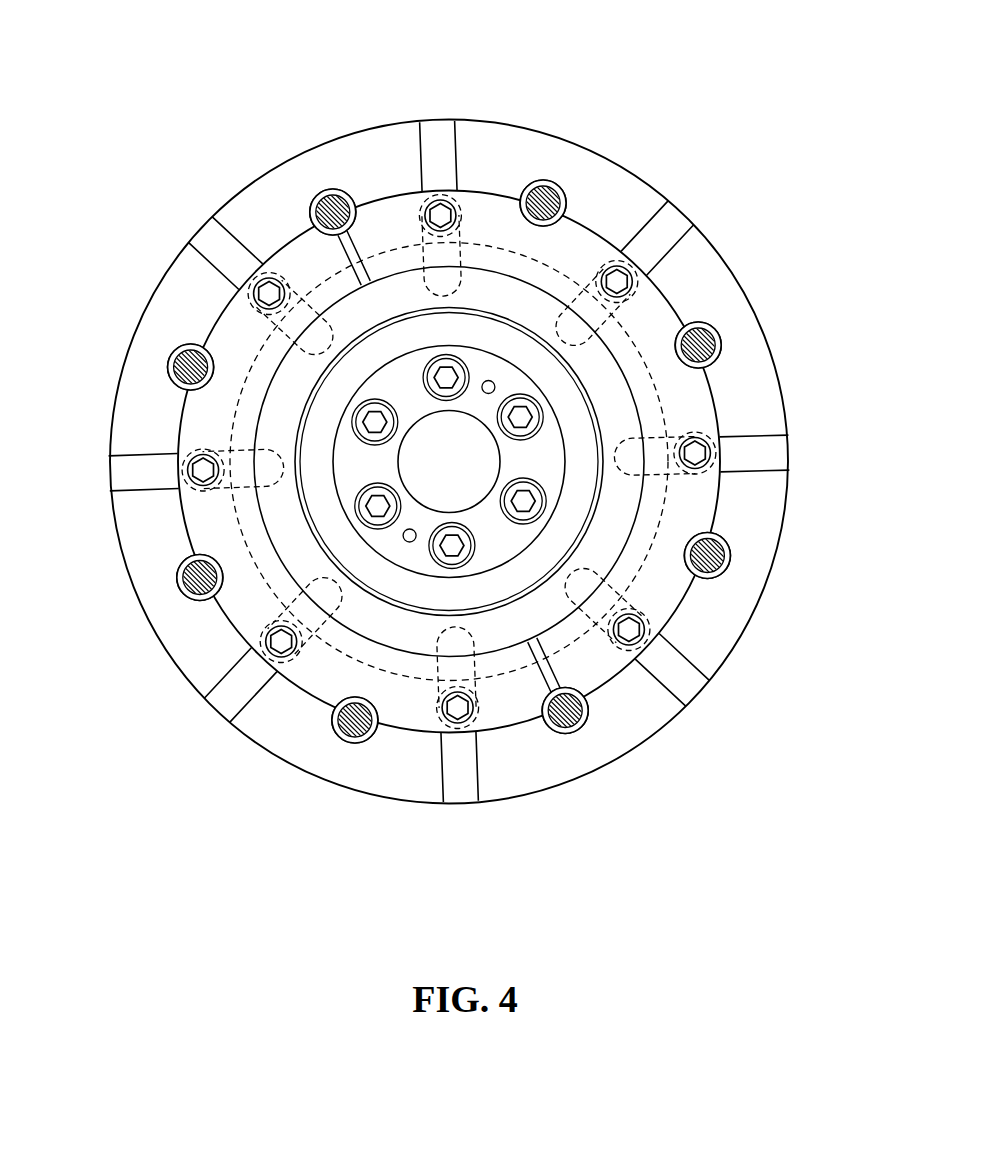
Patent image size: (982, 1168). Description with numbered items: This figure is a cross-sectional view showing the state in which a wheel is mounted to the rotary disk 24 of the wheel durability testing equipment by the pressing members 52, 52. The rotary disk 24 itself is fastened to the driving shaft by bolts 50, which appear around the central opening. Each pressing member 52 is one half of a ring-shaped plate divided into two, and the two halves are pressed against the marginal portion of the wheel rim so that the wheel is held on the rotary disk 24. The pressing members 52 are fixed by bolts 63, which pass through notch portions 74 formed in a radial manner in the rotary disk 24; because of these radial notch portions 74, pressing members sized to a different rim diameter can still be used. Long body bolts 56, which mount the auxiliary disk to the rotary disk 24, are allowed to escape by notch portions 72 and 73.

The rotary disk 24 is at (249, 180).
The bolts 50 is at (450, 356).
The pressing member 52 is at (668, 290).
The long body bolts 56 is at (326, 189).
The bolts 63 is at (441, 194).
The notch portions 72 is at (560, 190).
The notch portions 73 is at (317, 197).
The notch portions 74 is at (432, 197).